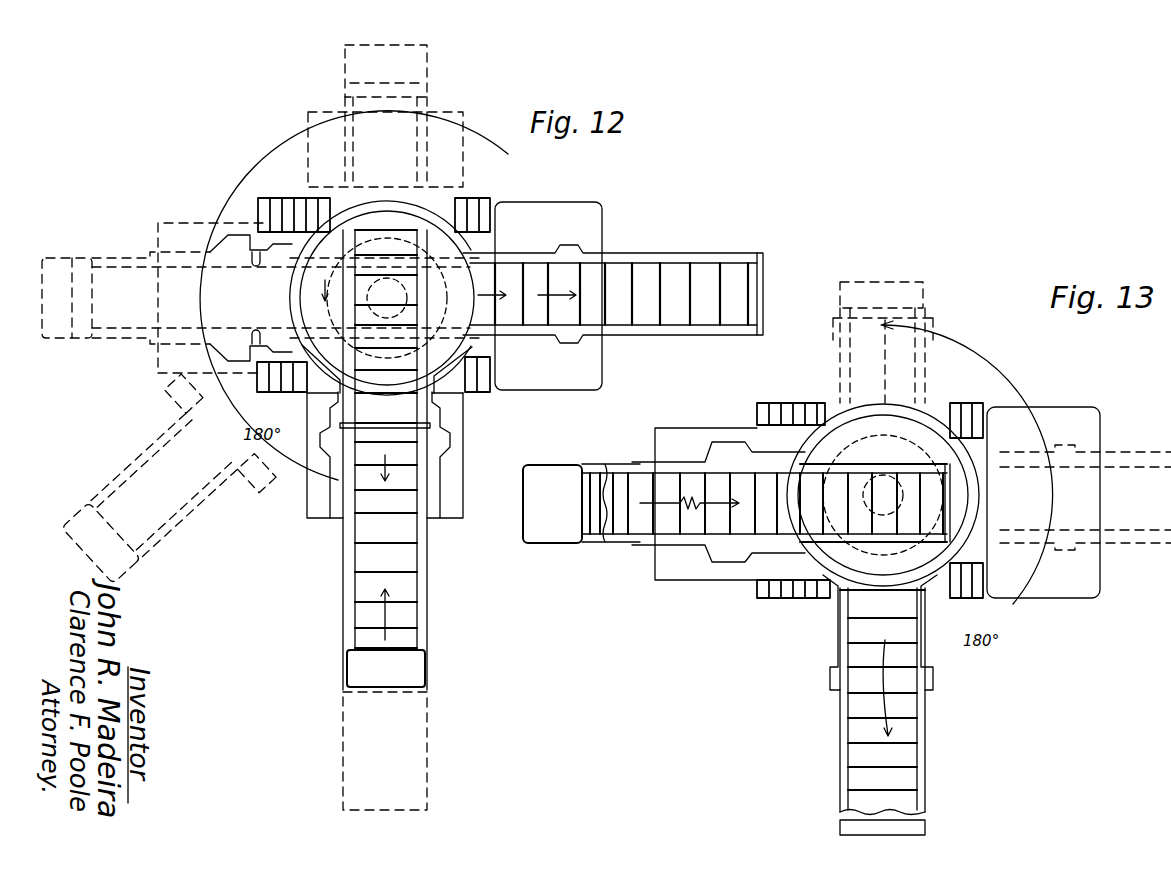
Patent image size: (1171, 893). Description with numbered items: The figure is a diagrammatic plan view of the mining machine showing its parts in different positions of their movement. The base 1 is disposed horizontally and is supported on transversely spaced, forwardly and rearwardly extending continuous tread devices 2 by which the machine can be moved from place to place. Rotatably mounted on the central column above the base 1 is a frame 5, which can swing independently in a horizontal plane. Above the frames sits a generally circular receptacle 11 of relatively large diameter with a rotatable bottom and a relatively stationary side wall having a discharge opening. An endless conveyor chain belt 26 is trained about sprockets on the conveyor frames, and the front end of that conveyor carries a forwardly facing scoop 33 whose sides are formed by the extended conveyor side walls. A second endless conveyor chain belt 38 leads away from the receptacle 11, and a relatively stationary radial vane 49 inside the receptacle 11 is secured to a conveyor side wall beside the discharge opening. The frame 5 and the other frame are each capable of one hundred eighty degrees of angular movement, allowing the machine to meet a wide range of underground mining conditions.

In FIG. 12, the base 1 is at (556, 202).
In FIG. 13, the base 1 is at (1060, 598).
In FIG. 12, the continuous tread devices 2 is at (488, 198).
In FIG. 13, the continuous tread devices 2 is at (795, 410).
In FIG. 12, the frame 5 is at (455, 474).
In FIG. 13, the frame 5 is at (735, 582).
In FIG. 12, the receptacle 11 is at (470, 352).
In FIG. 13, the receptacle 11 is at (830, 602).
In FIG. 12, the endless conveyor chain belt 26 is at (400, 590).
In FIG. 13, the endless conveyor chain belt 26 is at (636, 545).
In FIG. 12, the scoop 33 is at (420, 665).
In FIG. 12, the second endless conveyor chain belt 38 is at (640, 278).
In FIG. 13, the second endless conveyor chain belt 38 is at (905, 758).
In FIG. 12, the radial vane 49 is at (478, 250).
In FIG. 13, the radial vane 49 is at (940, 590).